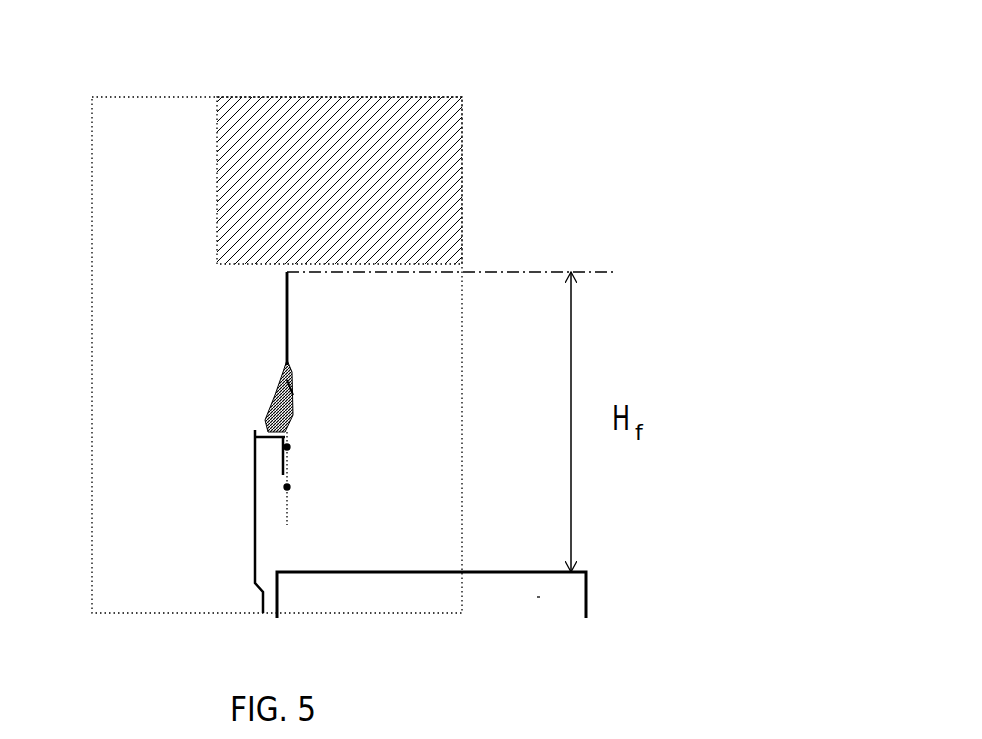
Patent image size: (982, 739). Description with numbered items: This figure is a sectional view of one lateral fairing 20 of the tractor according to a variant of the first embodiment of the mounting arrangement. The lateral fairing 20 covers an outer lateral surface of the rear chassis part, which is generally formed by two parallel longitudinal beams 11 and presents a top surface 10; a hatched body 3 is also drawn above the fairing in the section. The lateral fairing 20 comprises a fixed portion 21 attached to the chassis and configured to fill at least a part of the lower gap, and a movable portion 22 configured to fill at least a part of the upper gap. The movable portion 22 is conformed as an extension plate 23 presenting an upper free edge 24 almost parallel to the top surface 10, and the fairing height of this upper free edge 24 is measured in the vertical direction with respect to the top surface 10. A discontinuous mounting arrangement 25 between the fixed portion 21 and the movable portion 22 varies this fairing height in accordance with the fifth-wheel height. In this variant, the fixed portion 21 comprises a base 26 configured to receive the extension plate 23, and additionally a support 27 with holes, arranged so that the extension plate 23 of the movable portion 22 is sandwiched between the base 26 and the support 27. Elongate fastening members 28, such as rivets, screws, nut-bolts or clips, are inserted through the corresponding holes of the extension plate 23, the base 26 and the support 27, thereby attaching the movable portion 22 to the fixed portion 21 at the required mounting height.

The body / frame part 3 is at (301, 138).
The top surface 10 is at (473, 572).
The beam 11 is at (537, 597).
The lateral fairing 20 is at (155, 333).
The fixed portion 21 is at (254, 500).
The movable portion 22 is at (262, 327).
The extension plate 23 is at (289, 334).
The upper free edge 24 is at (288, 273).
The mounting arrangement 25 is at (262, 420).
The base 26 is at (265, 425).
The support 27 is at (293, 388).
The elongate fastening member 28 is at (298, 417).